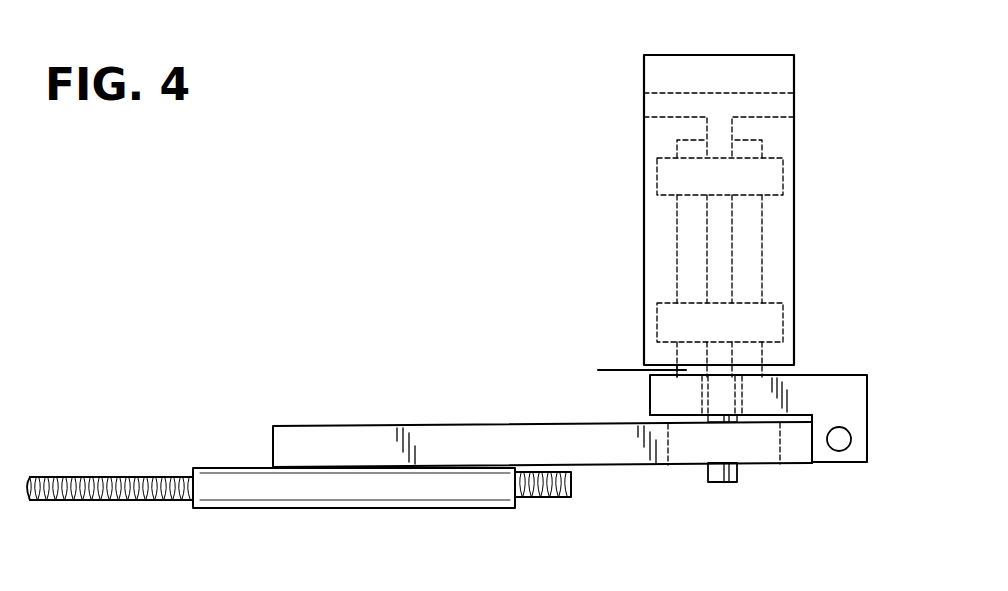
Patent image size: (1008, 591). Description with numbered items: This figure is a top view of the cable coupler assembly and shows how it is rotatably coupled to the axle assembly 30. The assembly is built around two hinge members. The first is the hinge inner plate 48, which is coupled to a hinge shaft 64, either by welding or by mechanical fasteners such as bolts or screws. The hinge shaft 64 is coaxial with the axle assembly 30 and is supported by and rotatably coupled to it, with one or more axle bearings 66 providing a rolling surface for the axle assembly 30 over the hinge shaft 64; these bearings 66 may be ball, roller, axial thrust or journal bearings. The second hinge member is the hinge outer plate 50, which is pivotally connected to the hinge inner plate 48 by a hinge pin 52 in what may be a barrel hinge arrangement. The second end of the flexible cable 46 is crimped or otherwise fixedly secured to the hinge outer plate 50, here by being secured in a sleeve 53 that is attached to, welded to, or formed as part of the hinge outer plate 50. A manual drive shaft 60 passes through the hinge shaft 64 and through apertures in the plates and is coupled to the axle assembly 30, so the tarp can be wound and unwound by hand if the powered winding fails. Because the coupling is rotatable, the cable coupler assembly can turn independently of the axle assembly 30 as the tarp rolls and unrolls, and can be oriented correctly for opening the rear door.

The axle assembly 30 is at (643, 82).
The axle bearings 66 is at (780, 315).
The hinge shaft 64 is at (598, 370).
The hinge inner plate 48 is at (816, 388).
The hinge outer plate 50 is at (397, 442).
The manual drive shaft 60 is at (720, 478).
The hinge pin 52 is at (846, 449).
The sleeve 53 is at (313, 490).
The flexible cable 46 is at (142, 483).